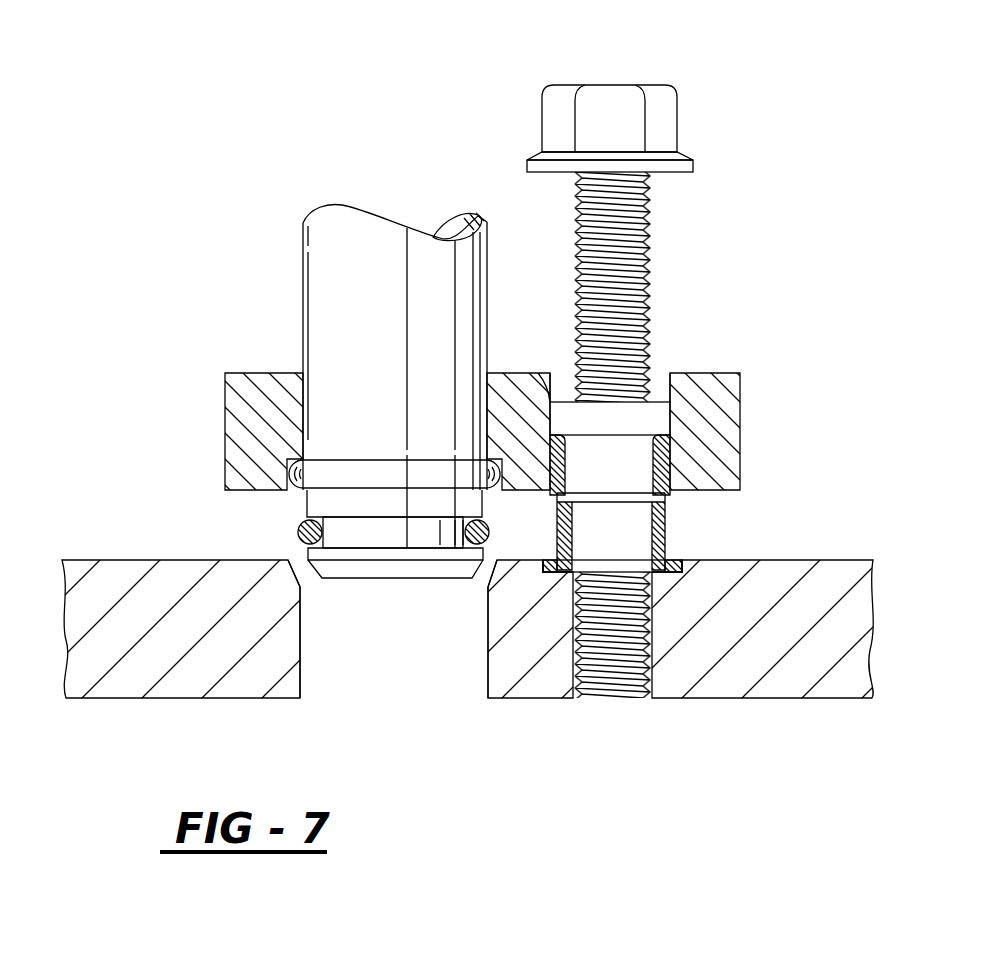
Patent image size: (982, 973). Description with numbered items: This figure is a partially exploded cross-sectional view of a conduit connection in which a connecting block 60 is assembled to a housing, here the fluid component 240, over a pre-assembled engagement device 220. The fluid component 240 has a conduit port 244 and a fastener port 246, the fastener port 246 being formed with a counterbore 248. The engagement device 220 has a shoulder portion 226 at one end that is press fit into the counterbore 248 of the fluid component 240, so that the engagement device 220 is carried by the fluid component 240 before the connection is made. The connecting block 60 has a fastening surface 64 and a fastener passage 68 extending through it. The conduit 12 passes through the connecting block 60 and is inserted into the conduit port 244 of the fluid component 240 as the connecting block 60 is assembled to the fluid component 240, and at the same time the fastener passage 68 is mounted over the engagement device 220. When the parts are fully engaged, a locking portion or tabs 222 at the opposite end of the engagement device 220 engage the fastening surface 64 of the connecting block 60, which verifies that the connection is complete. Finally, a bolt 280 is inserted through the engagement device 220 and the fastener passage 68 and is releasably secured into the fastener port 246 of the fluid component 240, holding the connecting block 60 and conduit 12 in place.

The conduit 12 is at (327, 224).
The connecting block 60 is at (476, 425).
The fastening surface 64 is at (730, 373).
The fastener passage 68 is at (562, 390).
The bolt 280 is at (668, 125).
The tabs 222 is at (672, 450).
The engagement device 220 is at (657, 522).
The shoulder portion 226 is at (667, 558).
The fluid component 240 is at (112, 560).
The conduit port 244 is at (301, 662).
The fastener port 246 is at (597, 683).
The counterbore 248 is at (547, 568).